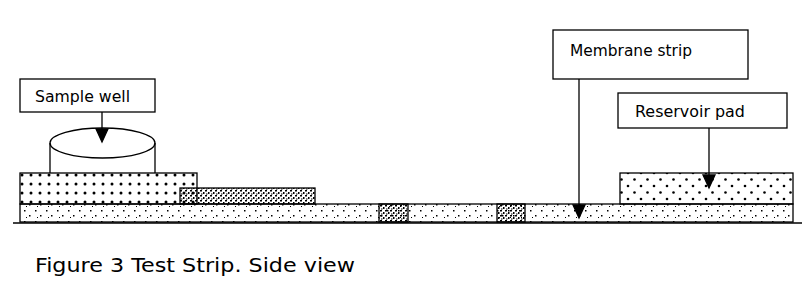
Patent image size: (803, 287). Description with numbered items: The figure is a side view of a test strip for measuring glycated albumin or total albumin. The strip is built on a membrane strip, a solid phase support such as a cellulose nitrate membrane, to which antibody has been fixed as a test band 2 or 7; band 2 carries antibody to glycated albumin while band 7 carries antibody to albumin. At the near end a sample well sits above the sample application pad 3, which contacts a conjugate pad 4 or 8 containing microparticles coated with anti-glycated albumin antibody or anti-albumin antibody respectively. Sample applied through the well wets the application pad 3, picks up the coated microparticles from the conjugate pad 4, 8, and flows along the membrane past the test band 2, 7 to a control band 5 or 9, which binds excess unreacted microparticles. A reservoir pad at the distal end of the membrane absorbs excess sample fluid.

The band 2 is at (402, 118).
The band 7 is at (384, 191).
The sample application pad 3 is at (172, 161).
The conjugate pad 4 is at (256, 141).
The conjugate pad 8 is at (256, 176).
The control band 5 is at (475, 157).
The control band 9 is at (515, 206).